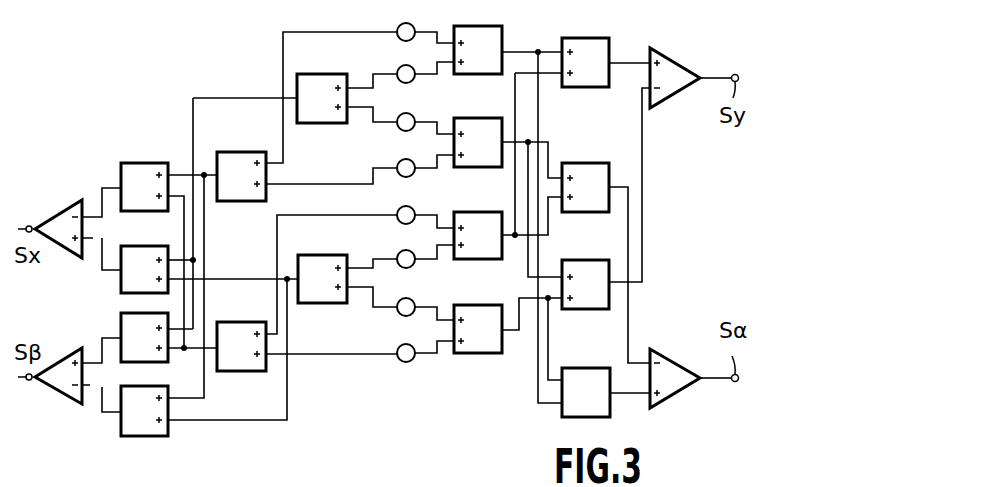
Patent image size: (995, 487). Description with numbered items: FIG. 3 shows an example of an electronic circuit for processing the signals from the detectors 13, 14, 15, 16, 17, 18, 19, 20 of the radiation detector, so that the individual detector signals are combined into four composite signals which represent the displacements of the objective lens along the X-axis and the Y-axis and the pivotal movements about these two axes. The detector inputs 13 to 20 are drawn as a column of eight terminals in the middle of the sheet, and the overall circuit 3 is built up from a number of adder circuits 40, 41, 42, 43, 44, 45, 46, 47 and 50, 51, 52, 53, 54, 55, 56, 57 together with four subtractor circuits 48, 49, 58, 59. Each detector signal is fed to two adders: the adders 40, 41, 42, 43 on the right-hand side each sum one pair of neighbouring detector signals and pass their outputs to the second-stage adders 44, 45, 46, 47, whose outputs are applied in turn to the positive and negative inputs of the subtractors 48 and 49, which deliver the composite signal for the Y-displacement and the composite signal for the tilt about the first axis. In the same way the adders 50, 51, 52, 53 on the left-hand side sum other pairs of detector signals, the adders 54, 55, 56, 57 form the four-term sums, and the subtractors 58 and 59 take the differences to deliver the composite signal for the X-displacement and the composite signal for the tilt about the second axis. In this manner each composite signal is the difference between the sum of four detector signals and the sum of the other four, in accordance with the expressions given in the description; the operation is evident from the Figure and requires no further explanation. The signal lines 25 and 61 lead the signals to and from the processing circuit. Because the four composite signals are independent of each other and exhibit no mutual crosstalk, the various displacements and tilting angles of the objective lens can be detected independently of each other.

The evaluation circuit 3 is at (223, 486).
The detector 13 is at (409, 25).
The detector 14 is at (409, 67).
The detector 15 is at (409, 115).
The detector 16 is at (409, 161).
The detector 17 is at (409, 208).
The detector 18 is at (409, 252).
The detector 19 is at (409, 300).
The detector 20 is at (409, 346).
The signal lines 25 is at (270, 4).
The adder circuit 40 is at (481, 21).
The adder circuit 41 is at (476, 118).
The adder circuit 42 is at (476, 212).
The adder circuit 43 is at (476, 305).
The adder circuit 44 is at (587, 38).
The adder circuit 45 is at (586, 163).
The adder circuit 46 is at (586, 260).
The adder circuit 47 is at (586, 368).
The subtractor circuit 48 is at (681, 93).
The subtractor circuit 49 is at (675, 367).
The adder circuit 50 is at (330, 74).
The adder circuit 51 is at (333, 308).
The adder circuit 52 is at (253, 152).
The adder circuit 53 is at (253, 372).
The adder circuit 54 is at (130, 162).
The adder circuit 55 is at (121, 287).
The adder circuit 56 is at (121, 318).
The adder circuit 57 is at (121, 424).
The subtractor circuit 58 is at (65, 252).
The subtractor circuit 59 is at (50, 360).
The signal line 61 is at (464, 482).